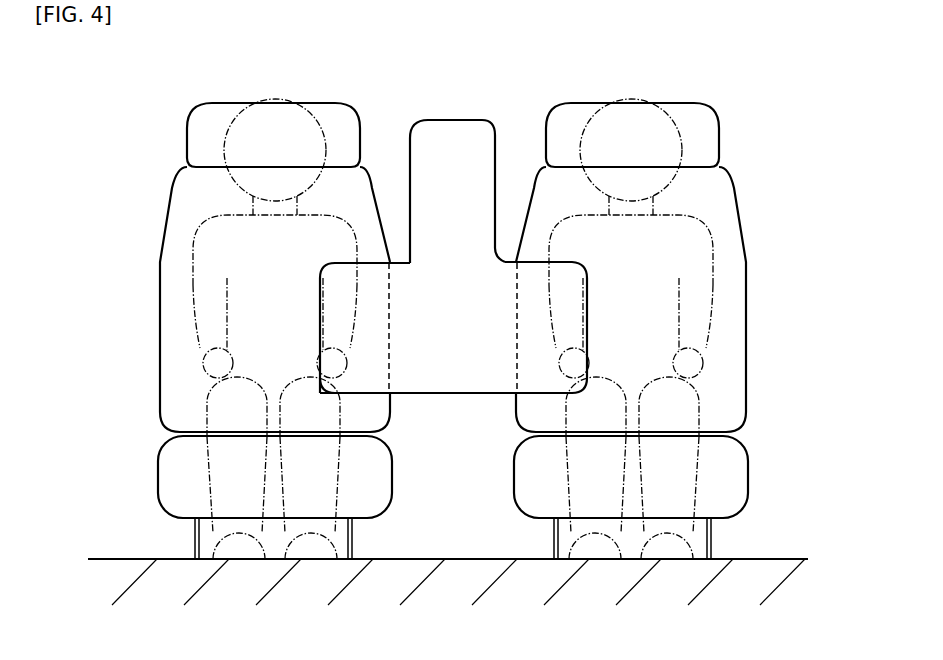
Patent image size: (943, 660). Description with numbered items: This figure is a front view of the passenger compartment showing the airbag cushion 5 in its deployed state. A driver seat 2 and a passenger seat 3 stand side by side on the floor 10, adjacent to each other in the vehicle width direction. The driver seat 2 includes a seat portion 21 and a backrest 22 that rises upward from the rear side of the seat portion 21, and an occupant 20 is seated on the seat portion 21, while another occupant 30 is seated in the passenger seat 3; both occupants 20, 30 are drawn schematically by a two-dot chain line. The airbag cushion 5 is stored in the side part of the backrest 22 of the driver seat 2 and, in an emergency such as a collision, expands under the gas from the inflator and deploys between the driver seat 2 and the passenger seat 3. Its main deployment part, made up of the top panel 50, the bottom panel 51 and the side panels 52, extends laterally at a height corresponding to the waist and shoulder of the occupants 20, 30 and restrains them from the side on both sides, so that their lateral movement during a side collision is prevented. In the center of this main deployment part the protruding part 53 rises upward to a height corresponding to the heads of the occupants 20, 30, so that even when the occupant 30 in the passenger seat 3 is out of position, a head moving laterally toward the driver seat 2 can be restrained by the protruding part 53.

The driver seat 2 is at (238, 329).
The passenger seat 3 is at (661, 329).
The airbag cushion 5 is at (554, 251).
The floor 10 is at (748, 559).
The occupant 20 is at (193, 310).
The seat portion 21 is at (158, 470).
The backrest 22 is at (160, 232).
The occupant 30 is at (745, 242).
The top panel 50 is at (532, 262).
The bottom panel 51 is at (460, 396).
The side panels 52 is at (588, 296).
The protruding part 53 is at (411, 129).